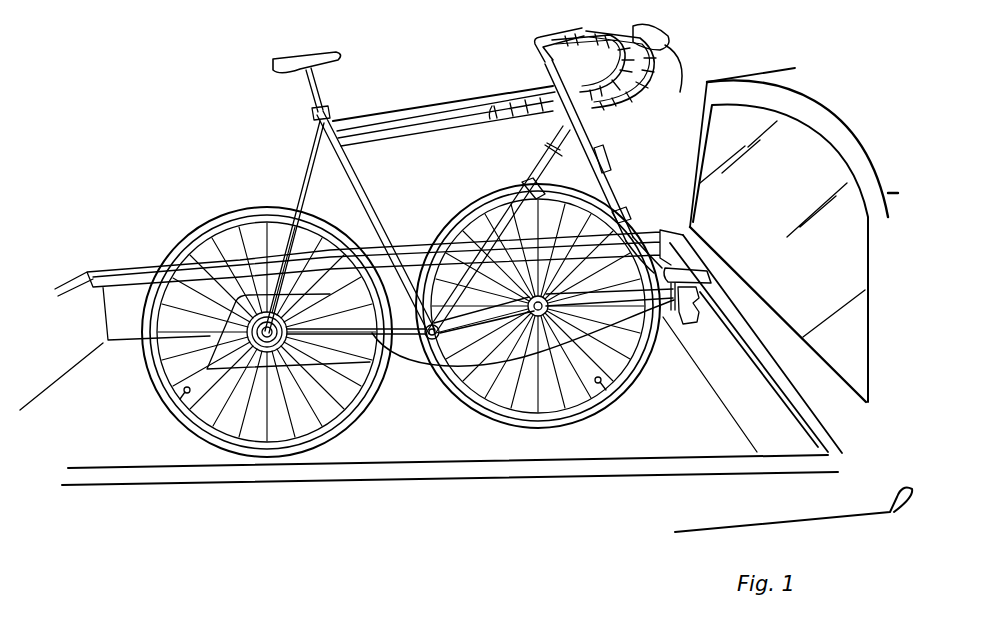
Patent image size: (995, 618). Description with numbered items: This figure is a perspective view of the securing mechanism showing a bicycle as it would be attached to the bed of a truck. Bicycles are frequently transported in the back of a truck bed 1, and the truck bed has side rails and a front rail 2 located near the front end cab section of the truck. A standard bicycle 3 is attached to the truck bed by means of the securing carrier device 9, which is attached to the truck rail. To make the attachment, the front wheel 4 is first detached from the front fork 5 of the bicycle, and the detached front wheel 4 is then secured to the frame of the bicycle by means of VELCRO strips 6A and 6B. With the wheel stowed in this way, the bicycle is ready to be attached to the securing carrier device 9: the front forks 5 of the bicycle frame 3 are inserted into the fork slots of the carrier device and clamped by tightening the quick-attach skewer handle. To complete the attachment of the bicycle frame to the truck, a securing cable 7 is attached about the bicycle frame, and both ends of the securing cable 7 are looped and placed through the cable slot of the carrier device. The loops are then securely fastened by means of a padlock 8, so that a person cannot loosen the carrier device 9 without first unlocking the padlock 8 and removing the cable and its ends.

The truck bed 1 is at (90, 430).
The front rail 2 is at (810, 418).
The bicycle 3 is at (338, 124).
The front wheel 4 is at (547, 435).
The front fork 5 is at (640, 240).
The VELCRO strip 6A is at (624, 222).
The VELCRO strip 6B is at (528, 188).
The securing cable 7 is at (416, 345).
The padlock 8 is at (692, 330).
The securing carrier device 9 is at (692, 272).